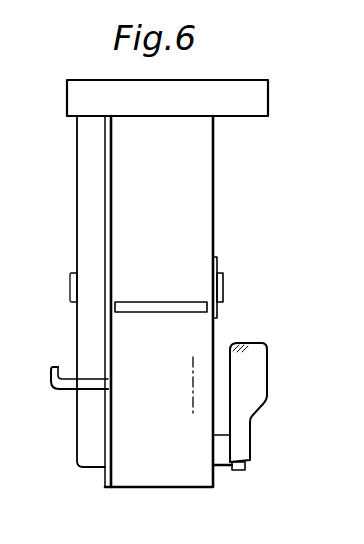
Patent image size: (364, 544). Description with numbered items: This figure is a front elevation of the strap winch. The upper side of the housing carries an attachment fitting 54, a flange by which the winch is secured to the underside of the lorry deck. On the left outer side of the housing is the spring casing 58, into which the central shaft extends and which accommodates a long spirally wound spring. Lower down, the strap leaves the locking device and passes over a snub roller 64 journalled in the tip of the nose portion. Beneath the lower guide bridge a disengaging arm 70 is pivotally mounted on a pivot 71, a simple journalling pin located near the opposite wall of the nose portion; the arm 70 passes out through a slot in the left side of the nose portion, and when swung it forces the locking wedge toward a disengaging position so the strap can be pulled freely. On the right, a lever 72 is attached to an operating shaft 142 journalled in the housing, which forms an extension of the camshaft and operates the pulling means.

The attachment fitting 54 is at (251, 103).
The spring casing 58 is at (89, 198).
The snub roller 64 is at (183, 308).
The disengaging arm 70 is at (72, 390).
The pivot 71 is at (190, 386).
The lever 72 is at (246, 372).
The operating shaft 142 is at (227, 456).